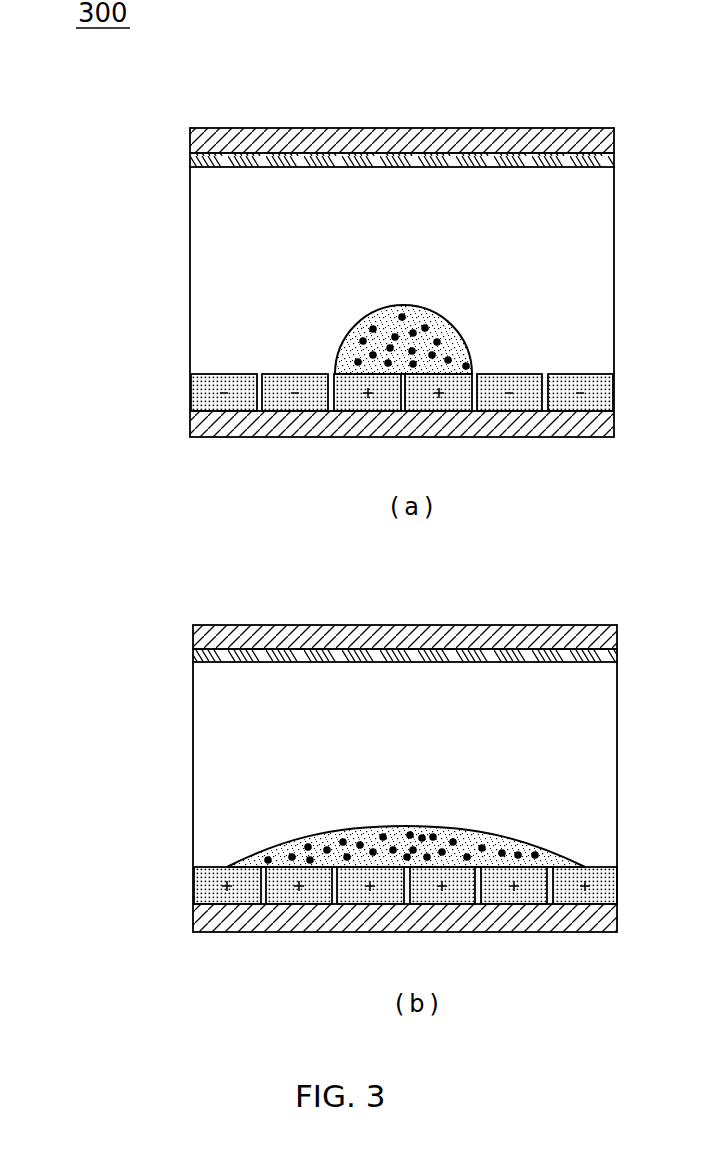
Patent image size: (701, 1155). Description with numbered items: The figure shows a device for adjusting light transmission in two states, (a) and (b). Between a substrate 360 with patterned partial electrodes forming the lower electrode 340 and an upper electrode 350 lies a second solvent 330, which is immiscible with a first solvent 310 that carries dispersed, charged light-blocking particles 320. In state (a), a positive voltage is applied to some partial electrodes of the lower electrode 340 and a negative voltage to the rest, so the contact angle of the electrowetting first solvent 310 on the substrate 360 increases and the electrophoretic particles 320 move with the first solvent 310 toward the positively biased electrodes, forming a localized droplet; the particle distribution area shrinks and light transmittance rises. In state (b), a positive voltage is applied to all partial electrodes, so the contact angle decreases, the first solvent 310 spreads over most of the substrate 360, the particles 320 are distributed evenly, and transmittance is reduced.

The first solvent 310 is at (352, 326).
The particles 320 is at (338, 360).
The second solvent 330 is at (233, 229).
The lower electrode 340 is at (200, 388).
The upper electrode 350 is at (193, 167).
The substrate 360 is at (197, 145).